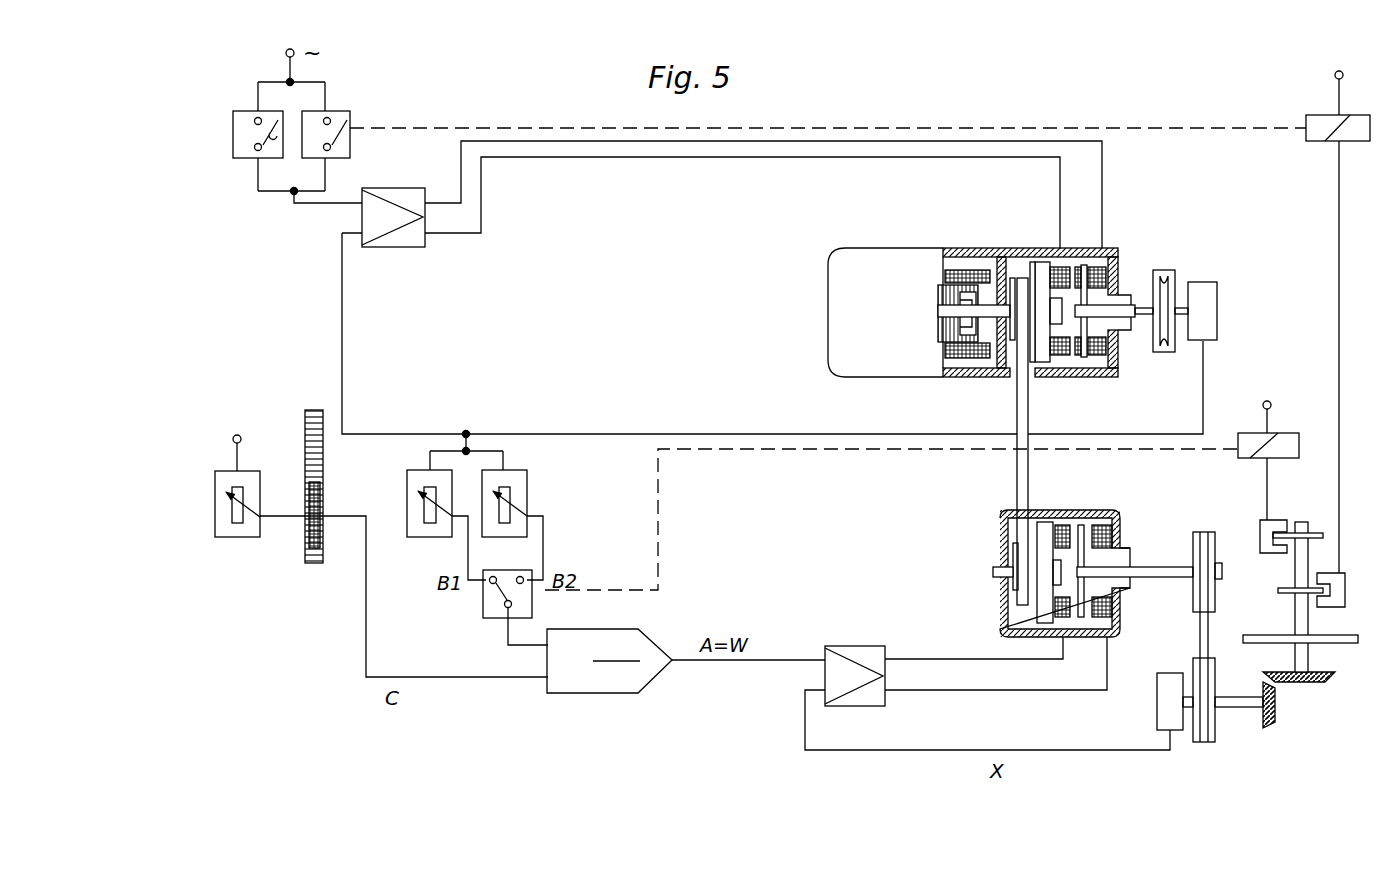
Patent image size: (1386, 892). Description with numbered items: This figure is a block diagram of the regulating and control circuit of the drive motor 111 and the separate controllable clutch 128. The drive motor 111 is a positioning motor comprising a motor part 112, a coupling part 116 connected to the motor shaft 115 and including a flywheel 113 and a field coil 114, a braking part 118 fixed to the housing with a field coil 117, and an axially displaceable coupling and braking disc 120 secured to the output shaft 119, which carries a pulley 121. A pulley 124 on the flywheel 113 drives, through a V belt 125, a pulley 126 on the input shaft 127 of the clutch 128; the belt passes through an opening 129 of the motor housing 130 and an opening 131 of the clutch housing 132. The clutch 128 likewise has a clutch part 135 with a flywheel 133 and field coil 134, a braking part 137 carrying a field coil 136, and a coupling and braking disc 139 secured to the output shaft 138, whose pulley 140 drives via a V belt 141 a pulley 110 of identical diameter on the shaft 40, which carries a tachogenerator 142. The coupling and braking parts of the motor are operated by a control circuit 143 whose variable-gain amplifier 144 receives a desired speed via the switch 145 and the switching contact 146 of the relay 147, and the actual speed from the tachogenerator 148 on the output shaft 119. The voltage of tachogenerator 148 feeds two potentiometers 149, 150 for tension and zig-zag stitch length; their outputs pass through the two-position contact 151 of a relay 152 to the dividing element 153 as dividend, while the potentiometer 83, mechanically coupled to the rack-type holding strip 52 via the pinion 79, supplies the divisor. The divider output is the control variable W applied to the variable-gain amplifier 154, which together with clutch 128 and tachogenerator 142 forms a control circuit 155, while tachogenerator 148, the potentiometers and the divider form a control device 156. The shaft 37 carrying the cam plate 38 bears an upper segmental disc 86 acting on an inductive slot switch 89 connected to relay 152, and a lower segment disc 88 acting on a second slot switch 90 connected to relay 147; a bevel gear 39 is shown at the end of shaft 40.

The shaft 37 is at (1305, 662).
The cam plate 38 is at (1325, 636).
The bevel gear 39 is at (1276, 690).
The shaft 40 is at (1248, 708).
The holding strip 52 is at (305, 424).
The pinion 79 is at (307, 543).
The potentiometer 83 is at (240, 534).
The upper segmental disc 86 is at (1318, 533).
The lower segment disc 88 is at (1282, 589).
The inductive slot switch 89 is at (1263, 545).
The inductive slot switch 90 is at (1340, 592).
The pulley 110 is at (1212, 742).
The drive motor 111 is at (879, 245).
The motor part 112 is at (960, 268).
The flywheel 113 is at (1043, 262).
The field coil 114 is at (1068, 266).
The motor shaft 115 is at (940, 312).
The coupling part 116 is at (1026, 266).
The field coil 117 is at (1103, 358).
The braking part 118 is at (1120, 356).
The output shaft 119 is at (1138, 306).
The coupling and braking disc 120 is at (1088, 270).
The pulley 121 is at (1174, 274).
The pulley 124 is at (1012, 352).
The V belt 125 is at (1025, 453).
The pulley 126 is at (1020, 592).
The input shaft 127 is at (1000, 573).
The controllable clutch 128 is at (995, 526).
The opening 129 is at (1031, 375).
The housing 130 is at (948, 378).
The opening 131 is at (1017, 510).
The clutch housing 132 is at (1000, 627).
The flywheel 133 is at (1045, 530).
The field coil 134 is at (1085, 522).
The clutch part 135 is at (1062, 522).
The field coil 136 is at (1107, 630).
The braking part 137 is at (1118, 609).
The output shaft 138 is at (1153, 572).
The coupling and braking disc 139 is at (1090, 630).
The pulley 140 is at (1195, 532).
The V belt 141 is at (1203, 640).
The tachogenerator 142 is at (1157, 712).
The control circuit 143 is at (336, 206).
The variable-gain amplifier 144 is at (402, 249).
The switch 145 is at (242, 160).
The switching contact 146 is at (342, 118).
The relay 147 is at (1317, 118).
The tachogenerator 148 is at (1213, 328).
The potentiometer 149 is at (418, 534).
The potentiometer 150 is at (520, 488).
The two-position contact 151 is at (491, 614).
The relay 152 is at (1252, 452).
The dividing element 153 is at (585, 686).
The variable-gain amplifier 154 is at (857, 652).
The control circuit 155 is at (890, 699).
The control device 156 is at (466, 590).